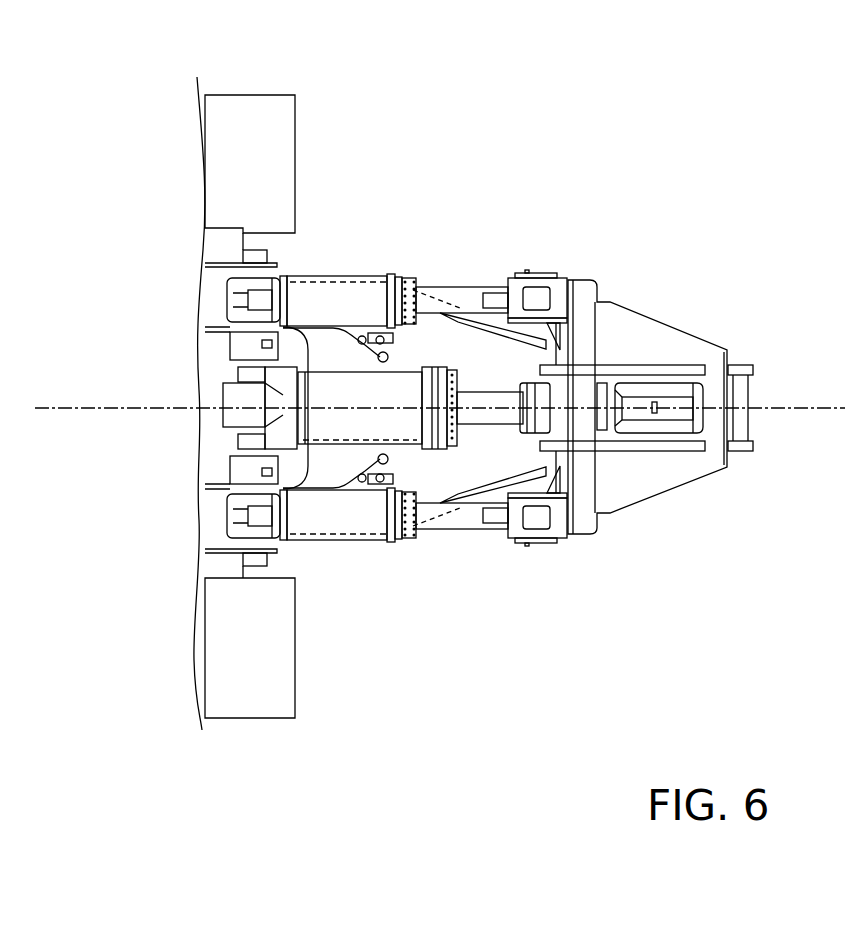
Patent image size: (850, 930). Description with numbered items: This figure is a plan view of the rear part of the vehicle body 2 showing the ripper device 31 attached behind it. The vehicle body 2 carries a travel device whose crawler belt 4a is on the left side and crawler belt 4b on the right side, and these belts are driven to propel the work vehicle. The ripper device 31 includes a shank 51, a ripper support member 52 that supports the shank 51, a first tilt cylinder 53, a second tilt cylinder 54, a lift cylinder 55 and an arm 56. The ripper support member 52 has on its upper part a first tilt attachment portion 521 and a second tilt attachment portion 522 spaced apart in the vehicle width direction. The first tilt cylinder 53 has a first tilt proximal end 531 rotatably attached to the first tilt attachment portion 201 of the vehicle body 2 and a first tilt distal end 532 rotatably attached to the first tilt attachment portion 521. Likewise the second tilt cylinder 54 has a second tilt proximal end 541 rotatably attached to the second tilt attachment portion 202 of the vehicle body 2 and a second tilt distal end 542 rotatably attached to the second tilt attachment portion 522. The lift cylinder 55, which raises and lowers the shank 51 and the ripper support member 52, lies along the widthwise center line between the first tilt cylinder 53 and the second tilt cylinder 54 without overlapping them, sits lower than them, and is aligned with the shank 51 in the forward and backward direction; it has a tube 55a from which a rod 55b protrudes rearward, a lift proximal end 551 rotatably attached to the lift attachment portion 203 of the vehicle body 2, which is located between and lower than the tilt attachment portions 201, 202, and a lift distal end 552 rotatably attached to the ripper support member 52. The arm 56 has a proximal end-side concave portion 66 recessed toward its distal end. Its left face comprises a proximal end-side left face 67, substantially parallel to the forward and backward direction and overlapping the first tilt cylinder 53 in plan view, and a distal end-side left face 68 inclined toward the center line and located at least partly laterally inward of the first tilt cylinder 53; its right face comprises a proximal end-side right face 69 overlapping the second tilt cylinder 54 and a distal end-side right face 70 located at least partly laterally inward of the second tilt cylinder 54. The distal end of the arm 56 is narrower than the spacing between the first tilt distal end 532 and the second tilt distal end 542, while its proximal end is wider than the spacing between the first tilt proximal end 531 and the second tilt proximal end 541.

The vehicle body 2 is at (207, 460).
The crawler belt 4a is at (242, 707).
The crawler belt 4b is at (243, 107).
The ripper device 31 is at (506, 152).
The shank 51 is at (680, 402).
The ripper support member 52 is at (640, 360).
The first tilt cylinder 53 is at (399, 557).
The second tilt cylinder 54 is at (394, 253).
The lift cylinder 55 is at (424, 555).
The tube 55a is at (357, 430).
The rod 55b is at (477, 418).
The arm 56 is at (452, 330).
The proximal end-side concave portion 66 is at (222, 420).
The proximal end-side left face 67 is at (327, 537).
The distal end-side left face 68 is at (496, 520).
The proximal end-side right face 69 is at (330, 277).
The distal end-side right face 70 is at (507, 290).
The first tilt attachment portion 201 is at (233, 550).
The second tilt attachment portion 202 is at (230, 263).
The lift attachment portion 203 is at (238, 377).
The first tilt attachment portion 521 is at (528, 540).
The second tilt attachment portion 522 is at (530, 273).
The first tilt proximal end 531 is at (228, 515).
The first tilt distal end 532 is at (585, 507).
The second tilt proximal end 541 is at (228, 290).
The second tilt distal end 542 is at (580, 293).
The lift proximal end 551 is at (223, 392).
The lift distal end 552 is at (560, 418).